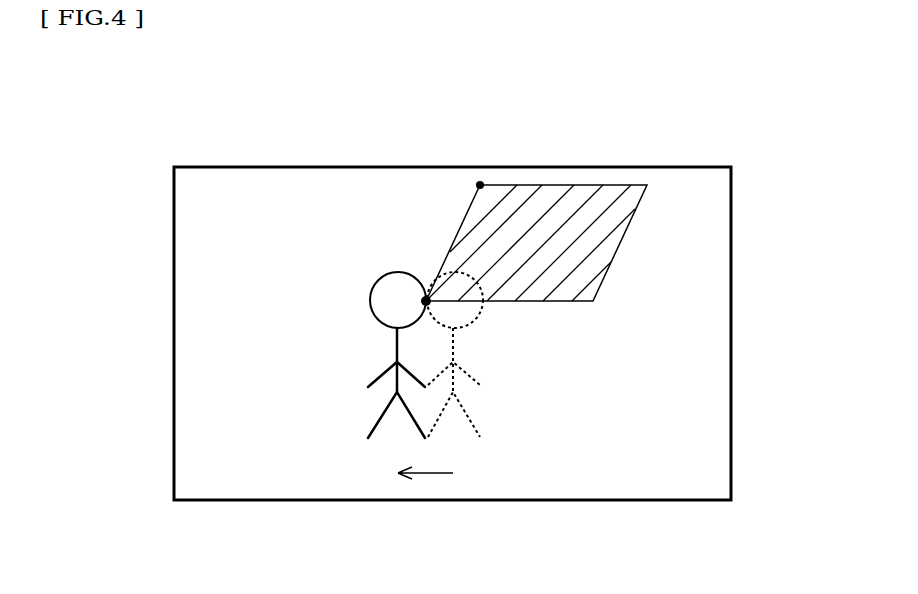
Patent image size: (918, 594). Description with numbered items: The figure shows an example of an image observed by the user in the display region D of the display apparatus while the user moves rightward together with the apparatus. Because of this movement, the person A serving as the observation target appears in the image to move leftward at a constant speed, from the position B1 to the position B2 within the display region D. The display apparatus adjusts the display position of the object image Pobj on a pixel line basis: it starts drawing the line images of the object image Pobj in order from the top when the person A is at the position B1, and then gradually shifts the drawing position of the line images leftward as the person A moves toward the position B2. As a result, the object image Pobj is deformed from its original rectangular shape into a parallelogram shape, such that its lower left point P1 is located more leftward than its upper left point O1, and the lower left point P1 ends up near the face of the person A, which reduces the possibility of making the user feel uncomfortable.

The person A is at (370, 300).
The display region D is at (617, 167).
The object image Pobj is at (620, 240).
The upper left point O1 is at (461, 185).
The lower left point P1 is at (437, 313).
The position B1 is at (459, 514).
The position B2 is at (404, 514).